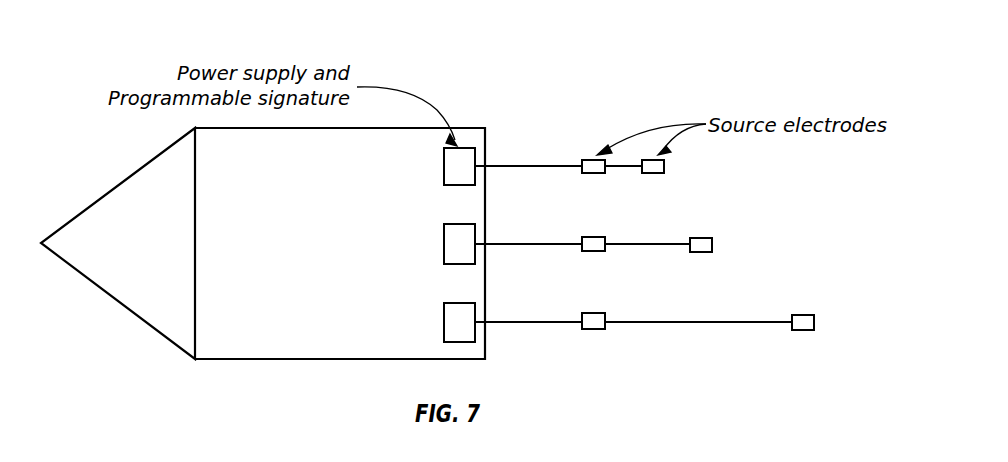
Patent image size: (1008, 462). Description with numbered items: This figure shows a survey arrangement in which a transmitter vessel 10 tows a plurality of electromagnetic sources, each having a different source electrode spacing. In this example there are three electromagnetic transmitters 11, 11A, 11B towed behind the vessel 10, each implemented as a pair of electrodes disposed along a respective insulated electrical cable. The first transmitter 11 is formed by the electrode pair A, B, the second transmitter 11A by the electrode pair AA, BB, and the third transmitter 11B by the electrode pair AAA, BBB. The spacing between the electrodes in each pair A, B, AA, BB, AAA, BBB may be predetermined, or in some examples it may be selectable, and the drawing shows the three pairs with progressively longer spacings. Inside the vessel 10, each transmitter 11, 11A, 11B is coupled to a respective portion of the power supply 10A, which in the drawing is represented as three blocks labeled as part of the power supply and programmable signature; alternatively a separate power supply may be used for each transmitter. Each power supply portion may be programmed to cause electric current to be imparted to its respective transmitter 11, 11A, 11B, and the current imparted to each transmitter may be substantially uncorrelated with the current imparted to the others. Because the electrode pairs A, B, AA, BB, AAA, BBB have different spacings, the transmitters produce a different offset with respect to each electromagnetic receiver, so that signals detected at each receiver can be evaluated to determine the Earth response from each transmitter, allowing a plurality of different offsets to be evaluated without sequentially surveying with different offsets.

The transmitter vessel 10 is at (123, 308).
The power supply 10A is at (444, 168).
The electromagnetic transmitter 11 is at (515, 167).
The electromagnetic transmitter 11A is at (515, 245).
The electromagnetic transmitter 11B is at (515, 323).
The electrode A is at (595, 173).
The electrode B is at (653, 173).
The electrode AA is at (595, 251).
The electrode BB is at (702, 252).
The electrode AAA is at (595, 329).
The electrode BBB is at (802, 330).